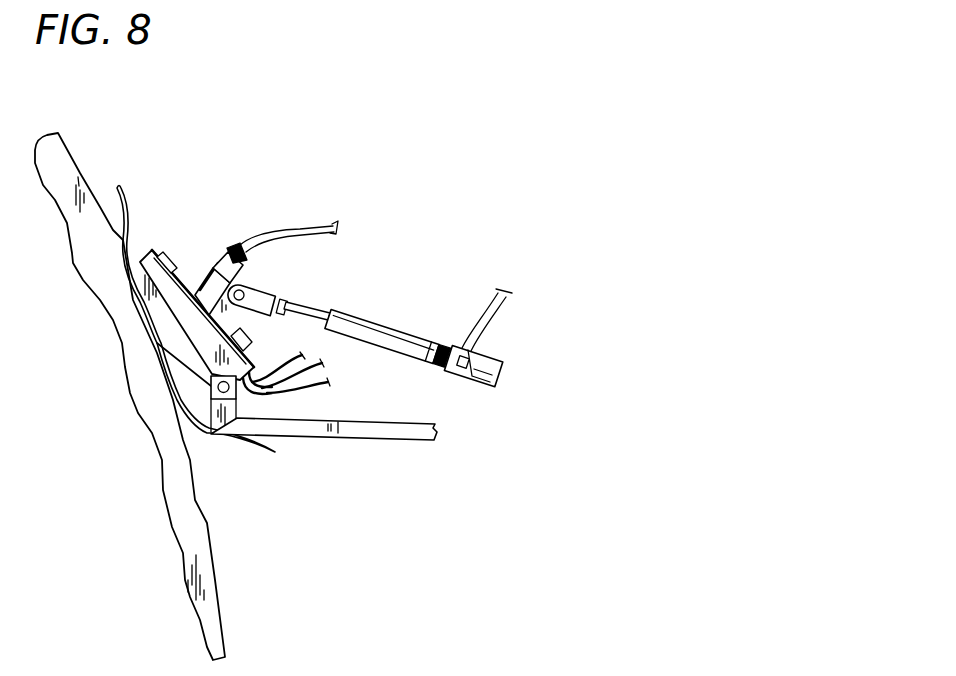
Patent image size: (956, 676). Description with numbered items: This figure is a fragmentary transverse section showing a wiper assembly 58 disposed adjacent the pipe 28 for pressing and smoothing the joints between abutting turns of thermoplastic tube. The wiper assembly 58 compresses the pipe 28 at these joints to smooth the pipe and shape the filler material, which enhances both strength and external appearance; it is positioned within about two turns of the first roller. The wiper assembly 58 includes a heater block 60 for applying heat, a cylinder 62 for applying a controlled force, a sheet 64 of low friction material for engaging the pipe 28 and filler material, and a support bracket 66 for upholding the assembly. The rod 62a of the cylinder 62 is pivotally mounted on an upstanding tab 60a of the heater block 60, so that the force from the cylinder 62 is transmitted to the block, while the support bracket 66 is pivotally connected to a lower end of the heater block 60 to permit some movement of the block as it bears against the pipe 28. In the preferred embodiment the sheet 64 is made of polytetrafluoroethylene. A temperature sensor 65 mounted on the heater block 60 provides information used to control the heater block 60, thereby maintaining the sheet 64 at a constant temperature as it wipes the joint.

The pipe 28 is at (207, 526).
The wiper assembly 58 is at (412, 168).
The heater block 60 is at (184, 278).
The upstanding tab 60a is at (243, 281).
The cylinder 62 is at (493, 353).
The rod 62a is at (293, 297).
The sheet of low friction material 64 is at (123, 237).
The temperature sensor 65 is at (248, 247).
The support bracket 66 is at (378, 438).